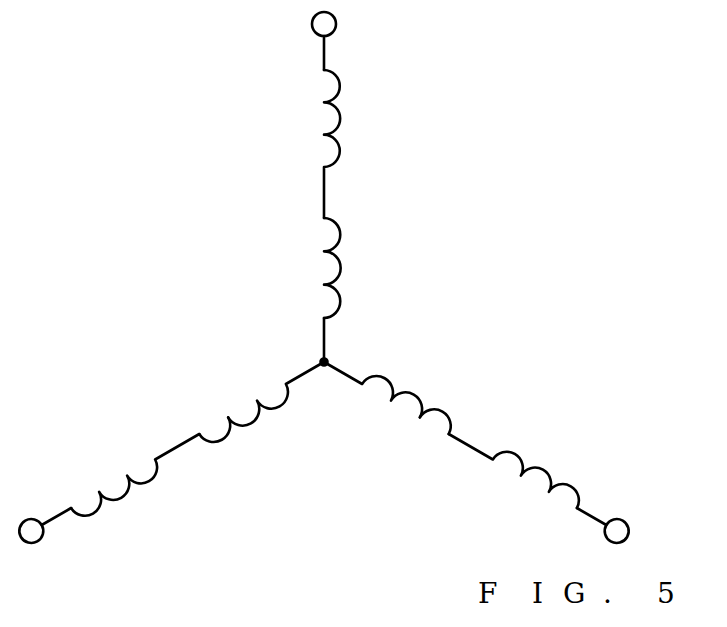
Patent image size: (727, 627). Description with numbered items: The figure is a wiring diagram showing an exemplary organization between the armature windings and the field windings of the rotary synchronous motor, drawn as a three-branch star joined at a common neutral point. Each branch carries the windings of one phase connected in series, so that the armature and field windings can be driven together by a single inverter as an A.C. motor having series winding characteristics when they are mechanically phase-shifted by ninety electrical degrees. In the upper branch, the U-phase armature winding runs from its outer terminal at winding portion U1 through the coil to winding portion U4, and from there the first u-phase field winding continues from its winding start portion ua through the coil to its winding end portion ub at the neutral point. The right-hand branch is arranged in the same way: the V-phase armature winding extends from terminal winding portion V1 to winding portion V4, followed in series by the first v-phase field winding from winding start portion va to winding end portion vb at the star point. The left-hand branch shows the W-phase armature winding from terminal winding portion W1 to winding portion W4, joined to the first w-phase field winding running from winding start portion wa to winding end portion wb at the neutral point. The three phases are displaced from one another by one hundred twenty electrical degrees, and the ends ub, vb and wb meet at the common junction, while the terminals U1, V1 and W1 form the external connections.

The U-phase armature winding portion U1 is at (333, 41).
The U-phase armature winding portion U4 is at (344, 144).
The winding start portion of first u-phase field winding ua is at (340, 261).
The winding end portion of first u-phase field winding ub is at (340, 337).
The V-phase armature winding portion V1 is at (602, 515).
The V-phase armature winding portion V4 is at (517, 463).
The winding start portion of first v-phase field winding va is at (446, 420).
The winding end portion of first v-phase field winding vb is at (376, 383).
The W-phase armature winding portion W1 is at (46, 524).
The W-phase armature winding portion W4 is at (139, 478).
The winding start portion of first w-phase field winding wa is at (210, 440).
The winding end portion of first w-phase field winding wb is at (280, 397).